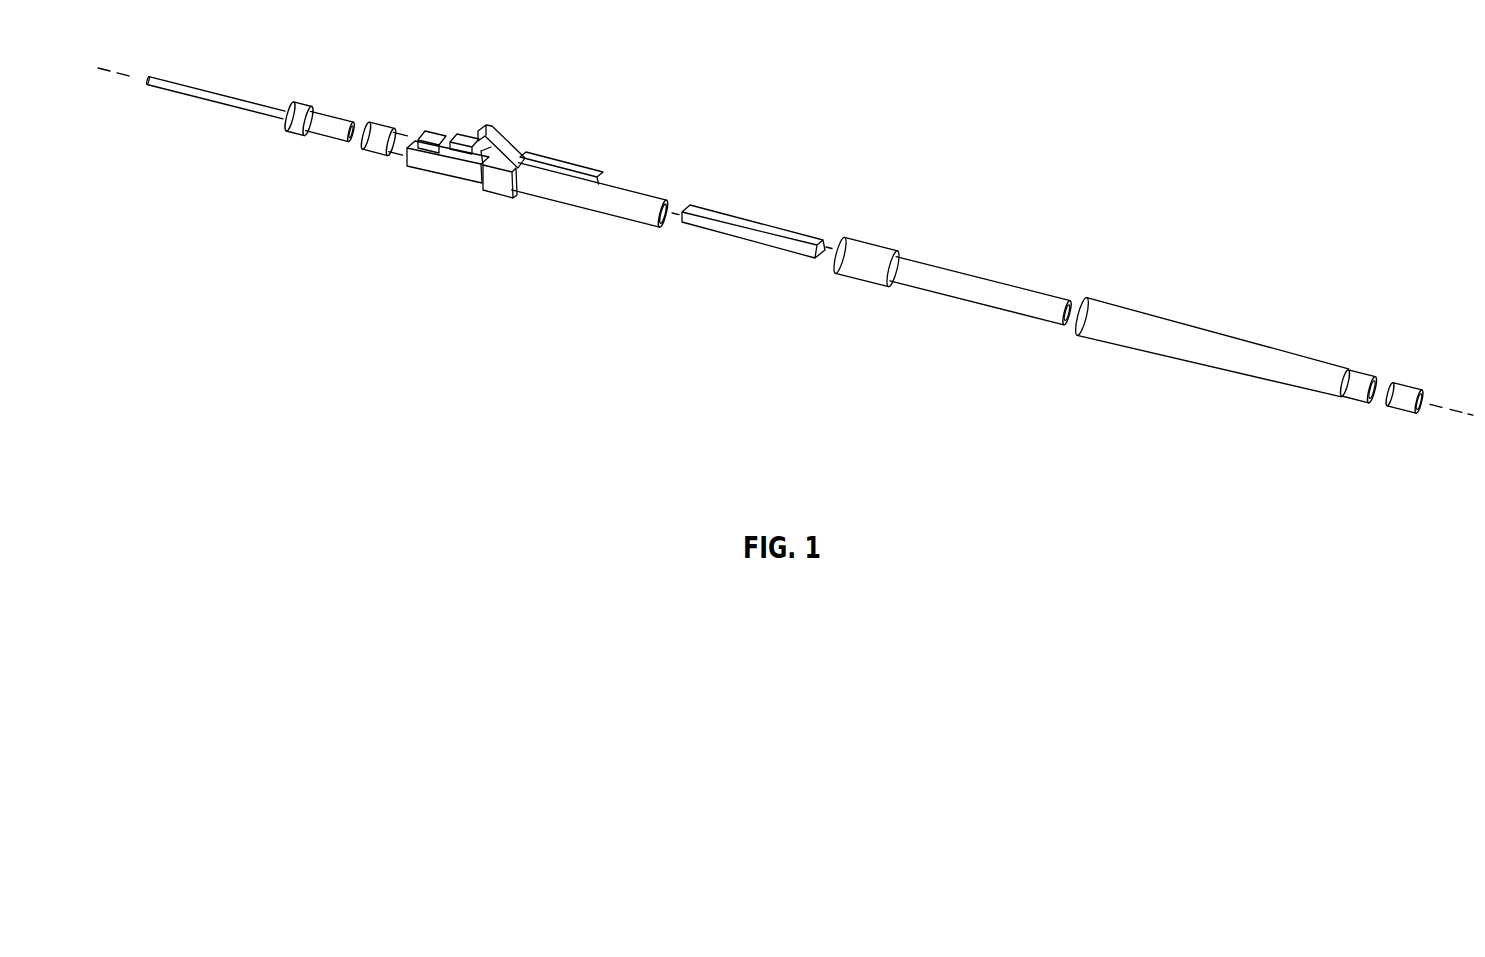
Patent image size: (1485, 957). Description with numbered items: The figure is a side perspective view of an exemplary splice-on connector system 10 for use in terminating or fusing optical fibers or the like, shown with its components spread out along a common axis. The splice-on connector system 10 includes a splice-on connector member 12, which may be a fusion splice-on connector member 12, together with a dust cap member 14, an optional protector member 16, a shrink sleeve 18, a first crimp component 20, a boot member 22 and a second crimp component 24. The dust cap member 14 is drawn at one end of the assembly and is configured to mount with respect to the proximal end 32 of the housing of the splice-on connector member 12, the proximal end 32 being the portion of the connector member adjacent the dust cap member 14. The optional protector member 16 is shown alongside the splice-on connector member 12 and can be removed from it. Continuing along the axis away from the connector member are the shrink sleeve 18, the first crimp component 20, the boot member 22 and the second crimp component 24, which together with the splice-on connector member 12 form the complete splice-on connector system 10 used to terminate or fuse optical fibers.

The splice-on connector system 10 is at (1012, 100).
The splice-on connector member 12 is at (452, 180).
The dust cap member 14 is at (268, 117).
The protector member 16 is at (604, 218).
The shrink sleeve 18 is at (748, 247).
The first crimp component 20 is at (963, 302).
The boot member 22 is at (1225, 371).
The second crimp component 24 is at (1400, 413).
The proximal end 32 is at (387, 122).